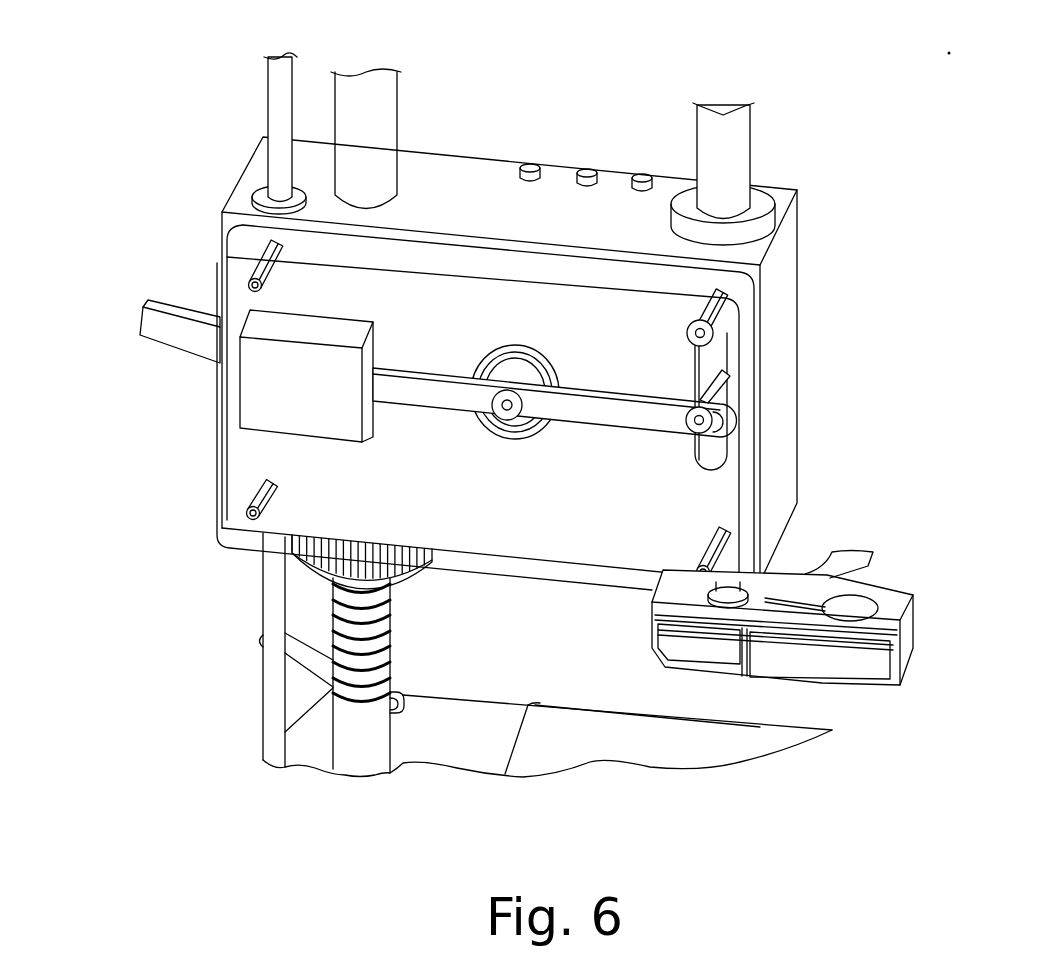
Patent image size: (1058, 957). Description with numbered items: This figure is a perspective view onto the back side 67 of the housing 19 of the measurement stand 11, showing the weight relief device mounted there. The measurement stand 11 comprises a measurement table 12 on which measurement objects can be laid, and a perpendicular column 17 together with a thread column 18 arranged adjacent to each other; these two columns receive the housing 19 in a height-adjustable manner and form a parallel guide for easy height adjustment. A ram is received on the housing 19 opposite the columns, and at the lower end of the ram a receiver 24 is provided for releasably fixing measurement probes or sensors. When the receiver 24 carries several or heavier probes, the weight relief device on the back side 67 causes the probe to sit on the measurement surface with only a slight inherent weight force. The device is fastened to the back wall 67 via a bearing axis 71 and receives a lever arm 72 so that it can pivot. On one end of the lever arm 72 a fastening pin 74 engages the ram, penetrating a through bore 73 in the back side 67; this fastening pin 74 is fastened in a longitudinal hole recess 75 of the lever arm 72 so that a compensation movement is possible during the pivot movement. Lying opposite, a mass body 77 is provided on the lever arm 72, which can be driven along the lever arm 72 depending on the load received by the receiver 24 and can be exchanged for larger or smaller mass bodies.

The measurement stand 11 is at (153, 250).
The measurement table 12 is at (552, 720).
The perpendicular column 17 is at (277, 108).
The thread column 18 is at (382, 117).
The housing 19 is at (502, 140).
The receiver 24 is at (792, 564).
The back side 67 is at (208, 478).
The bearing axis 71 is at (555, 424).
The lever arm 72 is at (423, 405).
The through bore 73 is at (712, 355).
The fastening pin 74 is at (720, 388).
The longitudinal hole recess 75 is at (725, 435).
The mass body 77 is at (260, 378).